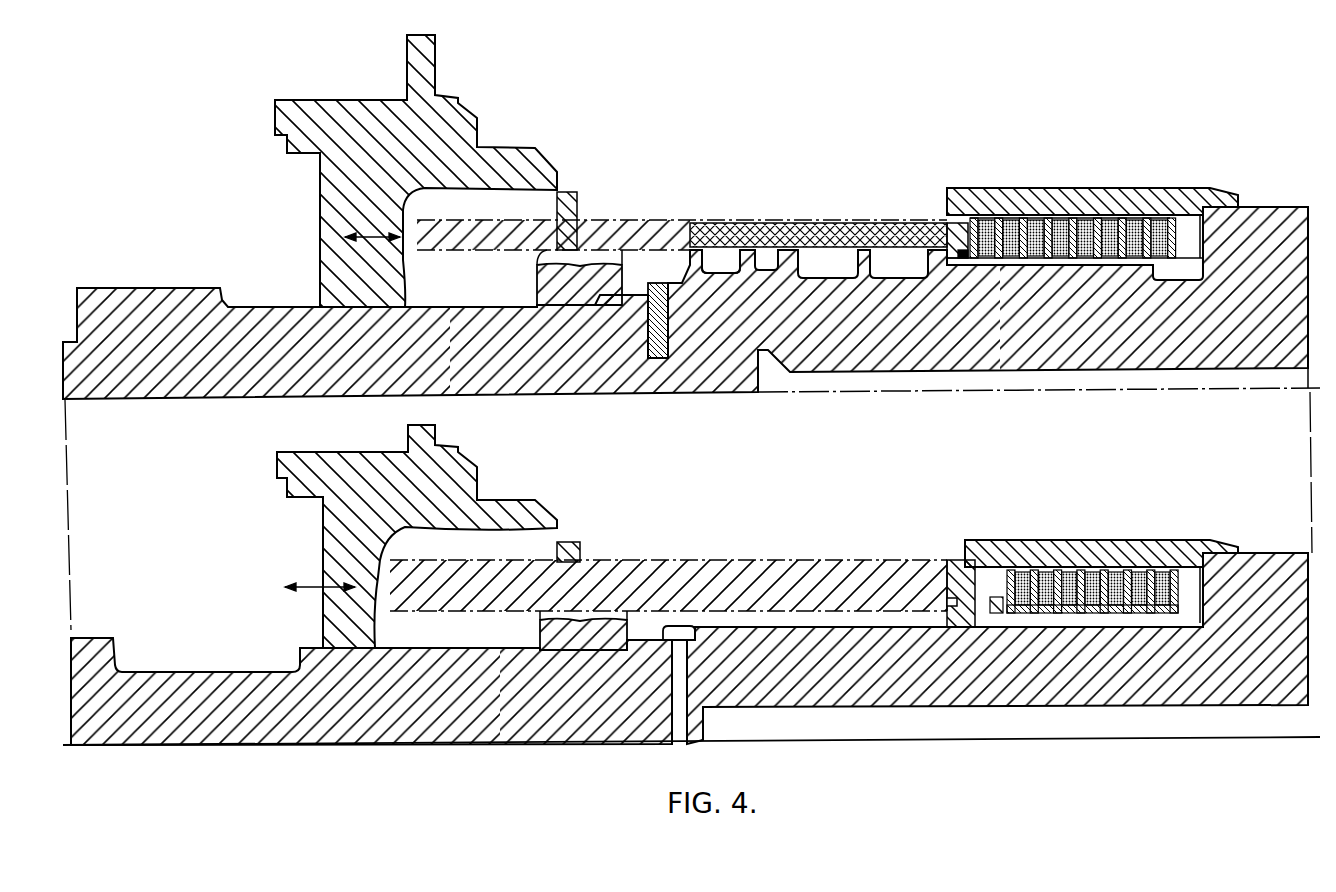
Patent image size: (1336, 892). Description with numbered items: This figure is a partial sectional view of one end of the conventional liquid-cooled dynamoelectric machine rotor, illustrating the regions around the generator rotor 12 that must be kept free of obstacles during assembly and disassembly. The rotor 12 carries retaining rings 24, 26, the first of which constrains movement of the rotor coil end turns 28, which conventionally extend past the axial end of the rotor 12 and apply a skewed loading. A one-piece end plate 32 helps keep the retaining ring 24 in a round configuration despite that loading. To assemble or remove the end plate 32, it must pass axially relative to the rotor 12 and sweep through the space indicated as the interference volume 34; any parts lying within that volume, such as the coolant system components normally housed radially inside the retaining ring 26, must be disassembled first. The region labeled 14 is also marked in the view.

The generator rotor 12 is at (1135, 347).
The annular groove 14 is at (702, 262).
The retaining ring 24 is at (1100, 197).
The retaining ring 26 is at (790, 228).
The rotor coil end turns 28 is at (1097, 258).
The end plate 32 is at (952, 228).
The interference volume 34 is at (492, 247).